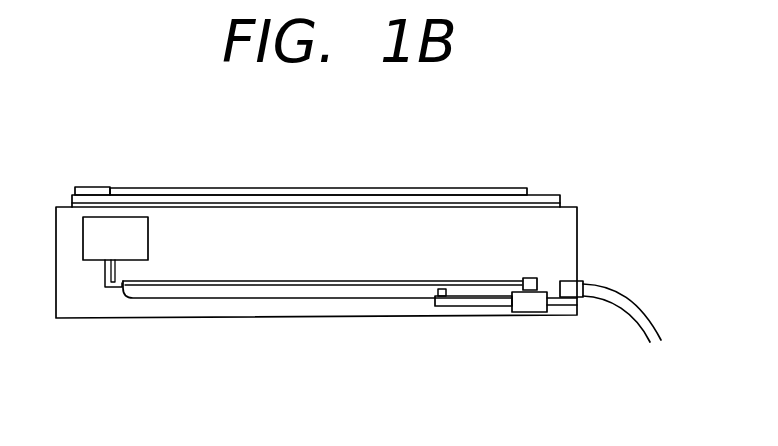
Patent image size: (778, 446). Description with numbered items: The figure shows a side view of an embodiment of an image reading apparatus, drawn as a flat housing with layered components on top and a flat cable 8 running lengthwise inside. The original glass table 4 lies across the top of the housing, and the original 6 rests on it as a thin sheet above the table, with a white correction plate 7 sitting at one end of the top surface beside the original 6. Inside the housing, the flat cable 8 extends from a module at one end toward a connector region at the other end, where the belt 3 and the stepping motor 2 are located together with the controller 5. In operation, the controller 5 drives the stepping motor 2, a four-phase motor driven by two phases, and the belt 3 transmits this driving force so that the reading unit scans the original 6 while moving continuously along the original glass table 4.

The stepping motor 2 is at (523, 312).
The belt 3 is at (505, 278).
The original glass table 4 is at (555, 195).
The controller 5 is at (442, 307).
The original 6 is at (330, 188).
The white correction plate 7 is at (100, 187).
The flat cable 8 is at (278, 299).